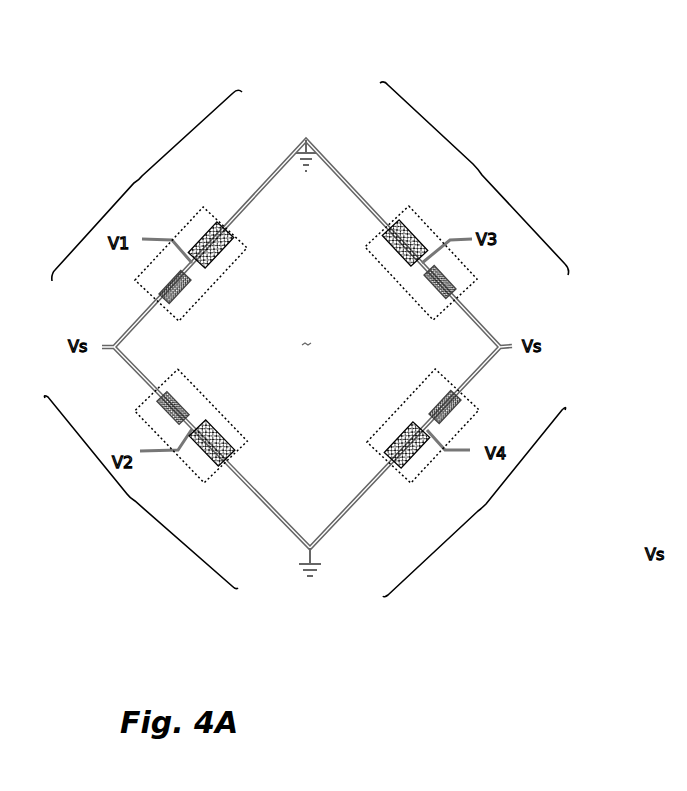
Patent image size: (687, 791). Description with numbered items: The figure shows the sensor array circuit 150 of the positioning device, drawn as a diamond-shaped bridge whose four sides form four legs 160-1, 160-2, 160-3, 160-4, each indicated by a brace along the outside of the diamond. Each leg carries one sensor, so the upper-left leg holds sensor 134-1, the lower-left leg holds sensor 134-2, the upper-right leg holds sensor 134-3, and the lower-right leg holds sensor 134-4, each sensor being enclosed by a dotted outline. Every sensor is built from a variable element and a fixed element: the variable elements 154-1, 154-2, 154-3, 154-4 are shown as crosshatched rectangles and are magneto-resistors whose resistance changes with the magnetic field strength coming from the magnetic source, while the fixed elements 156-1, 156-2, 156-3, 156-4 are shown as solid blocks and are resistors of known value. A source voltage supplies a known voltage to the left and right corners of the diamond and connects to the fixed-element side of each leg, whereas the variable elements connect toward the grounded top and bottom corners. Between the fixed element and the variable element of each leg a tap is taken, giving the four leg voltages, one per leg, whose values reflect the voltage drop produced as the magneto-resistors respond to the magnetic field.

The sensor array circuit 150 is at (525, 72).
The leg 160-1 is at (141, 178).
The leg 160-2 is at (132, 500).
The leg 160-3 is at (480, 168).
The leg 160-4 is at (482, 510).
The sensor 134-1 is at (138, 277).
The sensor 134-2 is at (204, 478).
The sensor 134-3 is at (477, 280).
The sensor 134-4 is at (479, 412).
The variable element 154-1 is at (226, 247).
The variable element 154-2 is at (217, 437).
The variable element 154-3 is at (393, 245).
The variable element 154-4 is at (388, 447).
The fixed element 156-1 is at (177, 290).
The fixed element 156-2 is at (168, 400).
The fixed element 156-3 is at (440, 283).
The fixed element 156-4 is at (433, 410).